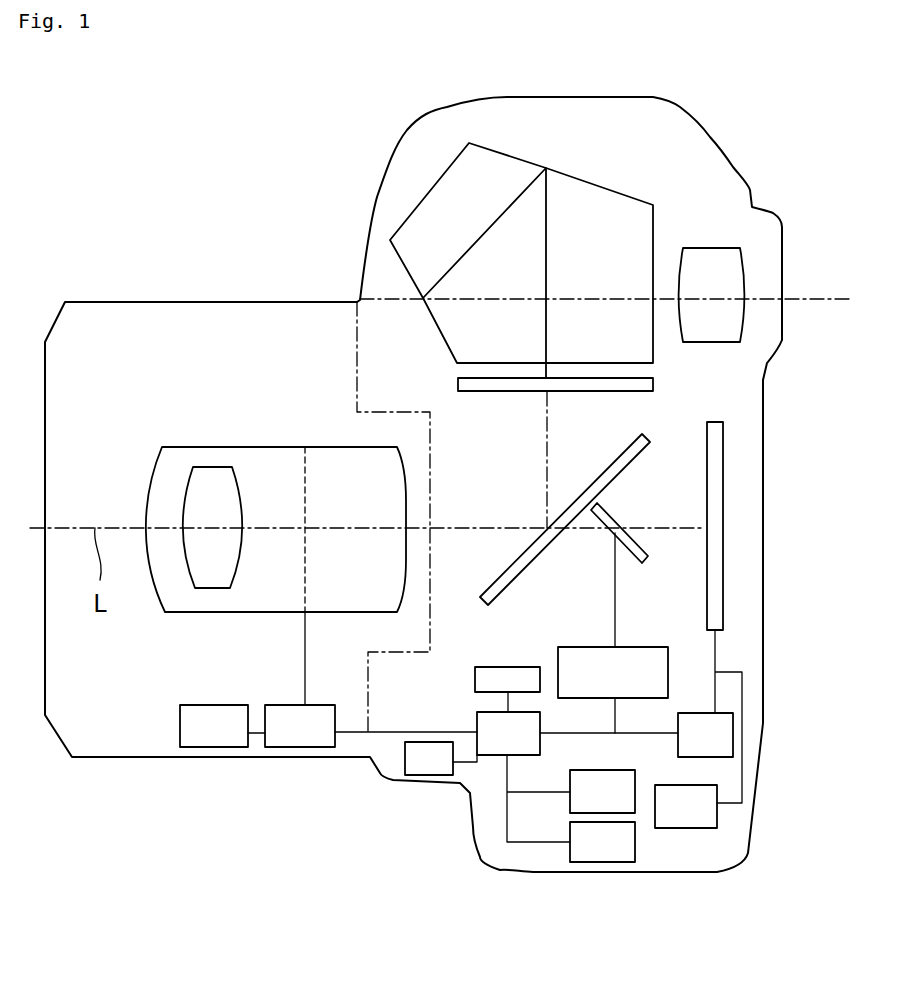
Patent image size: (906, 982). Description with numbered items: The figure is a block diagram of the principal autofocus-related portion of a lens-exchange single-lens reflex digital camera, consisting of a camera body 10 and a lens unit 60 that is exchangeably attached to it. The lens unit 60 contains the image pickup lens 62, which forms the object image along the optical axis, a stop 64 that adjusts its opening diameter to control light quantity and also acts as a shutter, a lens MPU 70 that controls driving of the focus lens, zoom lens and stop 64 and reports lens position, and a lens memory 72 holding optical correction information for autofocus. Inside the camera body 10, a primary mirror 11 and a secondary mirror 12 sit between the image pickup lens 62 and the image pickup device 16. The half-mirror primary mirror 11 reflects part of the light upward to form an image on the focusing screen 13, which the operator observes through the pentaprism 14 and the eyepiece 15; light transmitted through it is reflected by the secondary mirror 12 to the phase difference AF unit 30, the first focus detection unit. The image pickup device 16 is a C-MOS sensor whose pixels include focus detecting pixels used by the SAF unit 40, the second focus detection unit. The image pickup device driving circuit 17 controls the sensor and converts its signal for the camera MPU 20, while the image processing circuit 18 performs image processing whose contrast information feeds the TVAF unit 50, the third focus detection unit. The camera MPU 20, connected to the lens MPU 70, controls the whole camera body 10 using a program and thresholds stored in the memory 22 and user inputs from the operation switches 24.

The camera body 10 is at (717, 160).
The primary mirror 11 is at (493, 588).
The secondary mirror 12 is at (643, 562).
The focusing screen 13 is at (473, 382).
The pentaprism 14 is at (440, 318).
The eyepiece 15 is at (710, 330).
The image pickup device 16 is at (715, 480).
The image pickup device driving circuit 17 is at (723, 730).
The image processing circuit 18 is at (700, 815).
The camera MPU 20 is at (488, 745).
The memory 22 is at (487, 680).
The operation switches 24 is at (412, 763).
The phase difference AF unit 30 is at (578, 662).
The SAF unit 40 is at (627, 800).
The TVAF unit 50 is at (615, 847).
The lens unit 60 is at (135, 730).
The image pickup lens 62 is at (208, 475).
The stop 64 is at (305, 503).
The lens MPU 70 is at (305, 728).
The lens memory 72 is at (235, 733).